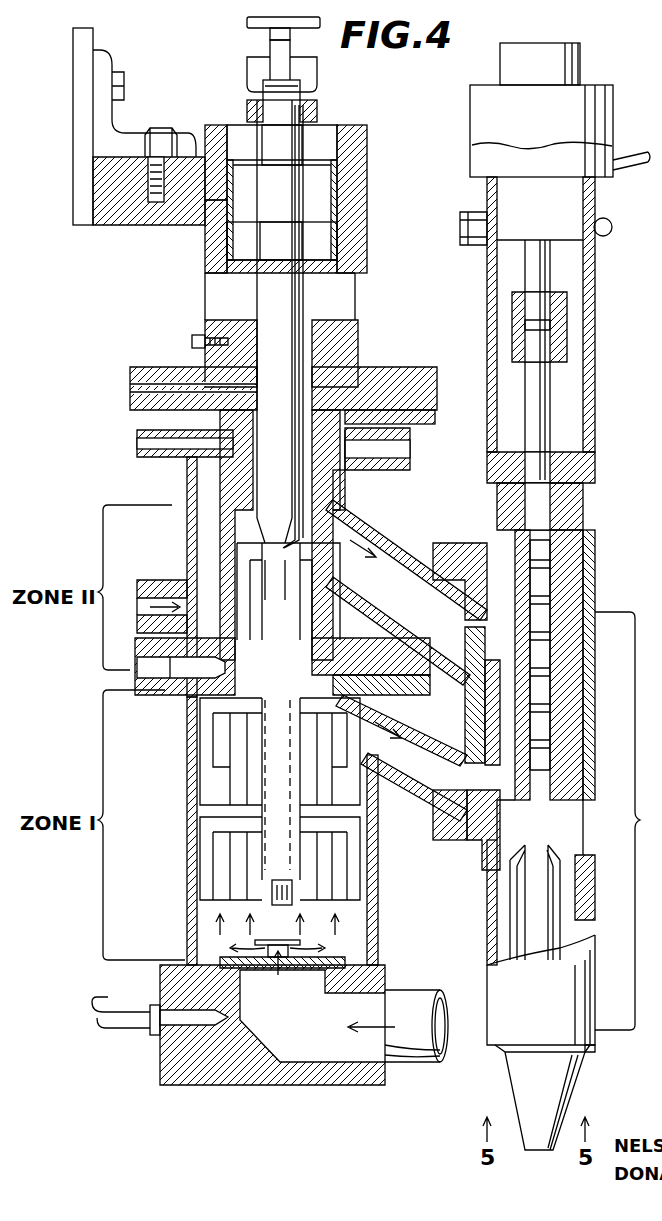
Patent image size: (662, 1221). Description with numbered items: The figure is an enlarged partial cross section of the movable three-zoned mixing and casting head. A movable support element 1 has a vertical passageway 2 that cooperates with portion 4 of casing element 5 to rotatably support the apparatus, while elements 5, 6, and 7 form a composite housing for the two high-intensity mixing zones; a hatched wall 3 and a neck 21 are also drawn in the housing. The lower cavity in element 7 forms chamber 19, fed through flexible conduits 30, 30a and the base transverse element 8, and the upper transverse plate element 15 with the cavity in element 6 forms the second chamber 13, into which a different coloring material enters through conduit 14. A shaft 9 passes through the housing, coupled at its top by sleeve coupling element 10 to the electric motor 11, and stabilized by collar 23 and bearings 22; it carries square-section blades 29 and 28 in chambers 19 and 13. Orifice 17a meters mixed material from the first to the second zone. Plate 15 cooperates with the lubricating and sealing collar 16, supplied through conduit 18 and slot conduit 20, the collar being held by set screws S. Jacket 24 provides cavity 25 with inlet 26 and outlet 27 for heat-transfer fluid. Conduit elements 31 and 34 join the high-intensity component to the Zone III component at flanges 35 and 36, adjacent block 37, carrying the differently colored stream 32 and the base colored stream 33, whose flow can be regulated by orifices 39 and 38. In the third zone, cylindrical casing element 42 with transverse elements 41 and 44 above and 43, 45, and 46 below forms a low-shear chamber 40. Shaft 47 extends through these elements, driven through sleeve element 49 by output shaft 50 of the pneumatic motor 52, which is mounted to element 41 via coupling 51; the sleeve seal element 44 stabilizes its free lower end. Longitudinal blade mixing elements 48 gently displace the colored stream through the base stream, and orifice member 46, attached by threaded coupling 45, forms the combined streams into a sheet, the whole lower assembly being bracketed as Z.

The movable support element 1 is at (178, 222).
The vertical extending passageway 2 is at (215, 242).
The upper housing 3 is at (362, 177).
The portion of casing element 4 is at (352, 248).
The casing element 5 is at (216, 130).
The housing element 6 is at (380, 420).
The housing element 7 is at (187, 858).
The base transverse element 8 is at (234, 1085).
The shaft 9 is at (293, 88).
The sleeve coupling element 10 is at (253, 70).
The variable speed electric motor 11 is at (247, 22).
The second mixing chamber 13 is at (240, 522).
The conduit 14 is at (145, 650).
The upper transverse plate element 15 is at (132, 382).
The lubricating and sealing collar 16 is at (288, 360).
The orifice 17a is at (250, 680).
The conduit 18 is at (137, 444).
The lower mixing chamber 19 is at (215, 886).
The slot conduit 20 is at (245, 443).
The neck 21 is at (348, 292).
The bearings 22 is at (290, 157).
The stabilizing collar 23 is at (317, 110).
The jacket 24 is at (350, 489).
The cavity 25 is at (368, 449).
The inlet 26 is at (150, 603).
The outlet 27 is at (410, 450).
The rectangular blade 28 is at (318, 635).
The rectangular blade 29 is at (322, 868).
The flexible conduit 30 is at (405, 1026).
The flexible conduit 30a is at (152, 1036).
The conduit element 31 is at (385, 540).
The differently colored stream 32 is at (413, 590).
The base colored stream 33 is at (437, 756).
The conduit element 34 is at (403, 778).
The flange 35 is at (445, 545).
The flange 36 is at (440, 845).
The block 37 is at (473, 845).
The orifice 38 is at (470, 787).
The orifice 39 is at (473, 630).
The lower chamber 40 is at (565, 815).
The transverse element 41 is at (590, 458).
The cylindrical casing element 42 is at (585, 656).
The transverse element 43 is at (588, 913).
The sleeve supporting and seal element 44 is at (560, 560).
The threaded coupling 45 is at (592, 1048).
The orifice member 46 is at (530, 1150).
The shaft 47 is at (538, 412).
The longitudinal blade mixing elements 48 is at (562, 850).
The sleeve element 49 is at (567, 310).
The rotary output shaft 50 is at (550, 288).
The coupling 51 is at (613, 228).
The variable speed pneumatic motor 52 is at (553, 122).
The set screws S is at (192, 340).
The nozzle zone Z is at (628, 821).